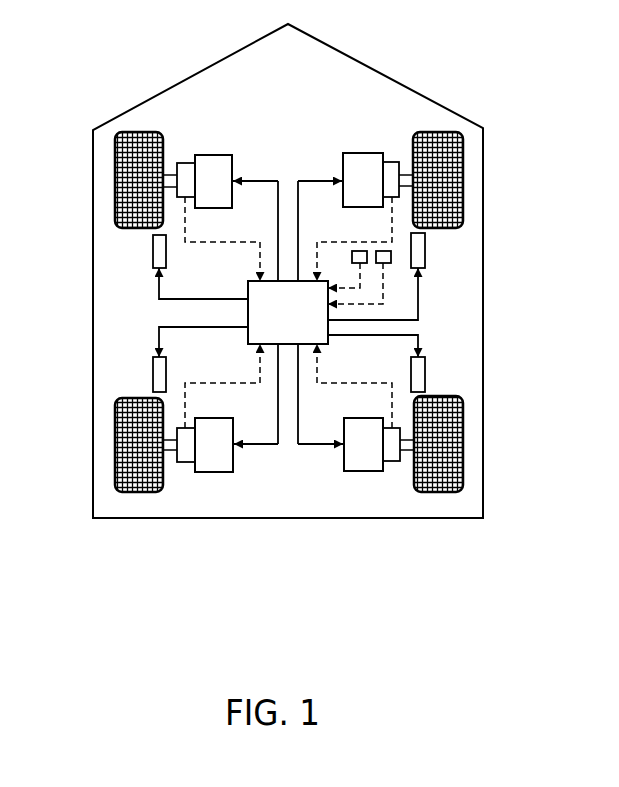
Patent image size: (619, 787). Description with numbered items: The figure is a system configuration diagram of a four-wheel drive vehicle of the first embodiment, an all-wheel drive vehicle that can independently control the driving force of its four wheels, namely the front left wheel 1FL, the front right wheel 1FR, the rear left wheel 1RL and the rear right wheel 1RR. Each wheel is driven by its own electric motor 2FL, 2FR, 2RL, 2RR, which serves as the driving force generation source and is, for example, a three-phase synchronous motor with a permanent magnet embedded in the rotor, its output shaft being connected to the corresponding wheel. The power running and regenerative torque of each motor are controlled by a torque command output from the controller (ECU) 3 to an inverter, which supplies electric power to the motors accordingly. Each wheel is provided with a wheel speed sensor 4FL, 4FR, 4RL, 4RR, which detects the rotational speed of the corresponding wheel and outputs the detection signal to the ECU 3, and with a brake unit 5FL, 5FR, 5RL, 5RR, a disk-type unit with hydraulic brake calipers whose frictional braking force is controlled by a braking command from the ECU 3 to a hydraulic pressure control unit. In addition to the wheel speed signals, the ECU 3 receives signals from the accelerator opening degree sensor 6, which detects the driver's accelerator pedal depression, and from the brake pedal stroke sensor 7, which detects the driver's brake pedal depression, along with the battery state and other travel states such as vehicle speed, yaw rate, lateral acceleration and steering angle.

The front left wheel 1FL is at (117, 172).
The front right wheel 1FR is at (463, 168).
The rear left wheel 1RL is at (117, 458).
The rear right wheel 1RR is at (463, 458).
The electric motor 2FL is at (213, 155).
The electric motor 2FR is at (365, 153).
The electric motor 2RL is at (215, 472).
The electric motor 2RR is at (362, 471).
The controller (ECU) 3 is at (248, 313).
The wheel speed sensor 4FL is at (185, 163).
The wheel speed sensor 4FR is at (393, 162).
The wheel speed sensor 4RL is at (188, 462).
The wheel speed sensor 4RR is at (390, 461).
The brake unit 5FL is at (153, 252).
The brake unit 5FR is at (425, 250).
The brake unit 5RL is at (153, 375).
The brake unit 5RR is at (425, 377).
The accelerator opening degree sensor 6 is at (382, 251).
The brake pedal stroke sensor 7 is at (358, 251).